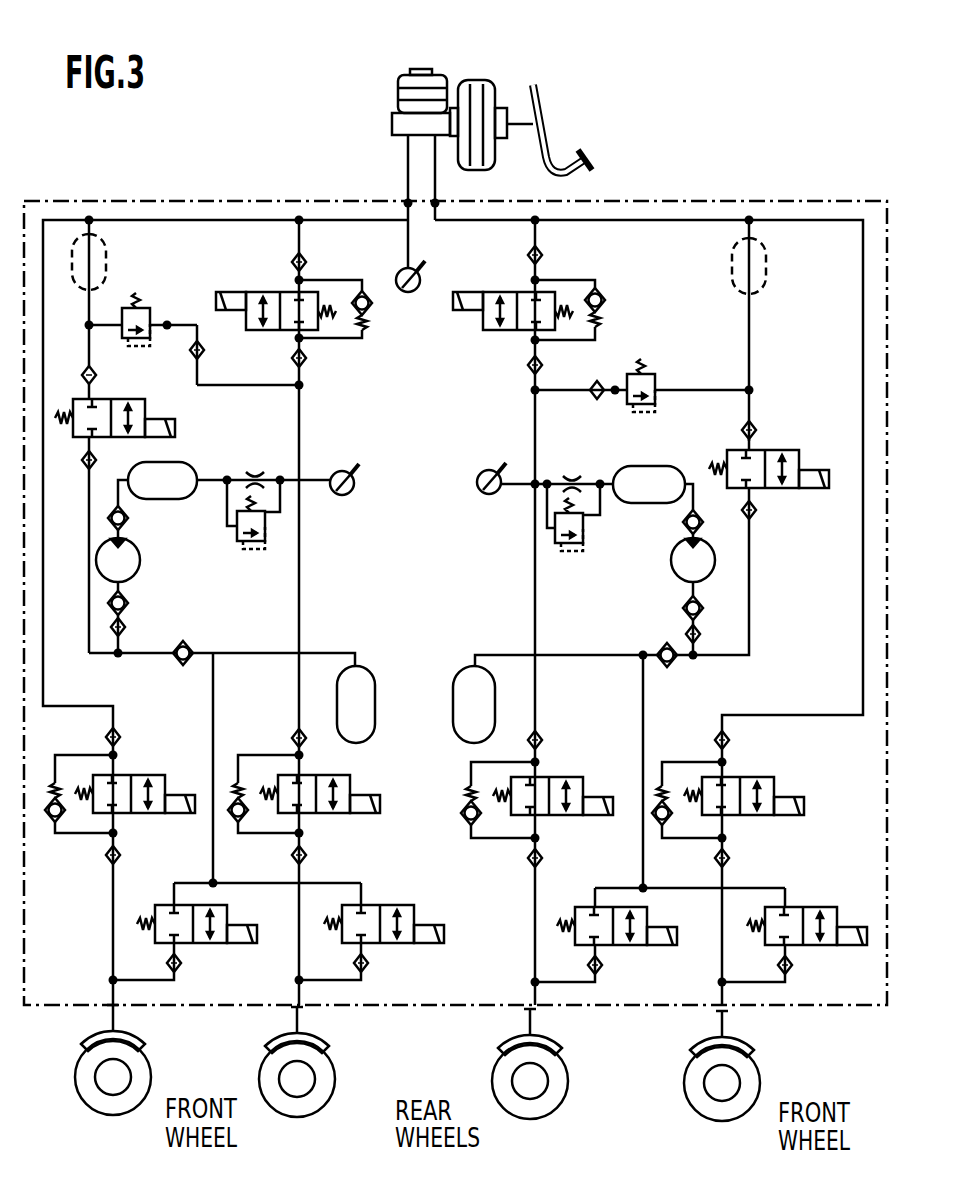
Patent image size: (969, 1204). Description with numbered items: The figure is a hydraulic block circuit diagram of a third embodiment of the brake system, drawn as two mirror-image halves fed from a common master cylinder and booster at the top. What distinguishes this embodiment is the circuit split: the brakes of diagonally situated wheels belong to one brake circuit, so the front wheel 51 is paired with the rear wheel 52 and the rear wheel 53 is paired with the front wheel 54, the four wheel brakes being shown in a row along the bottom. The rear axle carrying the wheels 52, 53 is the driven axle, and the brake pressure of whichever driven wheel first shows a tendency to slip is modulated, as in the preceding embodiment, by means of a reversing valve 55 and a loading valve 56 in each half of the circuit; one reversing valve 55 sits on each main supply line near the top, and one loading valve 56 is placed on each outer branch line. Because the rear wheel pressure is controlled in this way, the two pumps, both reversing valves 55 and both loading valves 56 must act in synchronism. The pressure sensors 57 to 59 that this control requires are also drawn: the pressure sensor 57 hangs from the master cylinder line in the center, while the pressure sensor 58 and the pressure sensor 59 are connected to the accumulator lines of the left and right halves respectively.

The wheel 51 is at (145, 1080).
The wheel 52 is at (329, 1082).
The wheel 53 is at (562, 1082).
The wheel 54 is at (754, 1084).
The reversing valve 55 is at (252, 292).
The loading valve 56 is at (165, 405).
The pressure sensor 57 is at (412, 294).
The pressure sensor 58 is at (350, 495).
The pressure sensor 59 is at (497, 495).